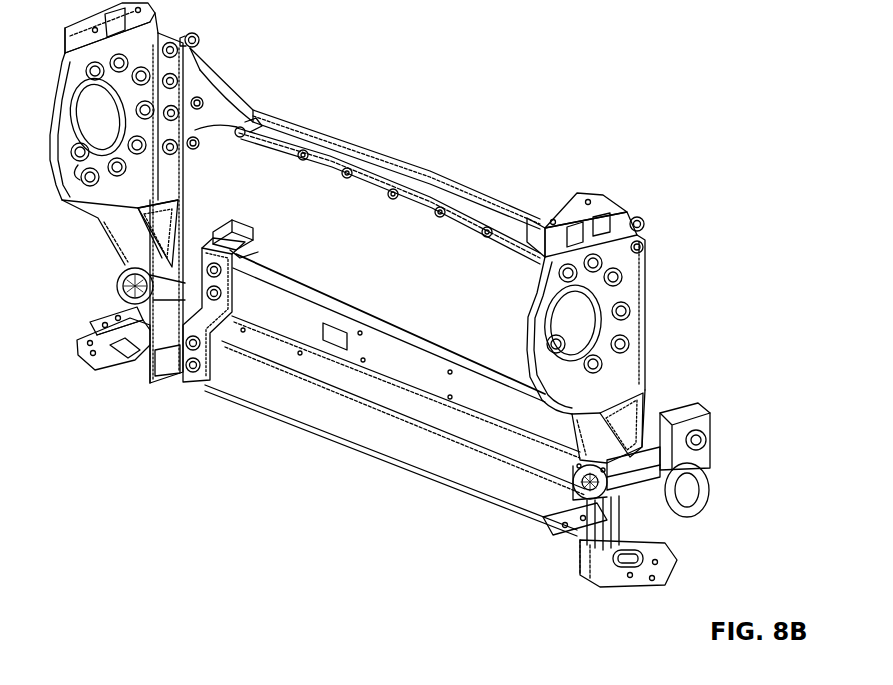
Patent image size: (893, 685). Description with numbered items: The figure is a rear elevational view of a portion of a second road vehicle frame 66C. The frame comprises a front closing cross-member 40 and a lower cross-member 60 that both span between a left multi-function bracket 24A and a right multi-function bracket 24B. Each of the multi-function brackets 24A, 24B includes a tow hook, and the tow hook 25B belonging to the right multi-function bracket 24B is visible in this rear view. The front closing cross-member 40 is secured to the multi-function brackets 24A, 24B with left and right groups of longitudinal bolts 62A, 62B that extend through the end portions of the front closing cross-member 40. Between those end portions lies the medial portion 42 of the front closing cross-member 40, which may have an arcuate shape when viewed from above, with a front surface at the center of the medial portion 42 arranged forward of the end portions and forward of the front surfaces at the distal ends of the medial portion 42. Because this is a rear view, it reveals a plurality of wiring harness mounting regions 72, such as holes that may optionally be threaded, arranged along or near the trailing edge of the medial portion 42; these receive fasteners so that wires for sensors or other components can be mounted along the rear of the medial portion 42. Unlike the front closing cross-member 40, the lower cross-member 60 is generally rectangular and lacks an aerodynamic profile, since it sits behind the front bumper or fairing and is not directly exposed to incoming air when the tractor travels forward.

The left multi-function bracket 24A is at (63, 200).
The right multi-function bracket 24B is at (650, 380).
The tow hook 25B is at (700, 512).
The front closing cross-member 40 is at (427, 178).
The medial portion 42 is at (364, 150).
The lower cross-member 60 is at (393, 340).
The left group of longitudinal bolts 62A is at (200, 37).
The right group of longitudinal bolts 62B is at (643, 219).
The second road vehicle frame 66C is at (540, 135).
The wiring harness mounting regions 72 is at (392, 192).